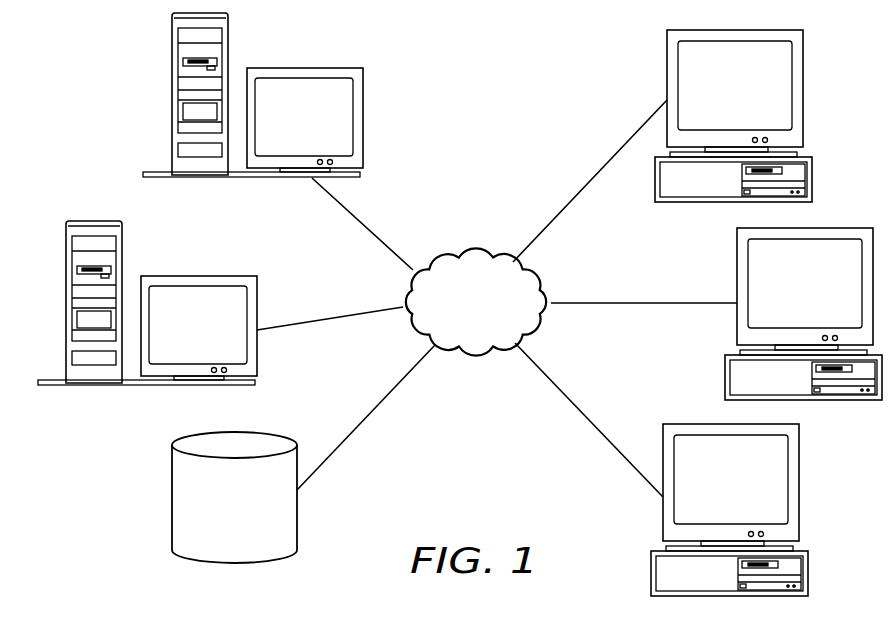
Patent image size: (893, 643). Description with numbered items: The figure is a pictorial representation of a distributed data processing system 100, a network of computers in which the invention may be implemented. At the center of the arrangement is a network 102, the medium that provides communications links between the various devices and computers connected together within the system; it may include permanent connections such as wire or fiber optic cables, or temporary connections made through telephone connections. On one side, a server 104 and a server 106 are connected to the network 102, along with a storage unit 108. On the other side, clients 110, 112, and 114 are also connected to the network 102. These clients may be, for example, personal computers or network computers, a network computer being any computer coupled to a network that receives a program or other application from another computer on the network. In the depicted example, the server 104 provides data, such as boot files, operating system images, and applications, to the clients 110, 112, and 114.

The distributed data processing system 100 is at (482, 98).
The network 102 is at (457, 330).
The server 104 is at (181, 334).
The server 106 is at (287, 126).
The storage unit 108 is at (214, 537).
The client 110 is at (717, 98).
The client 112 is at (803, 326).
The client 114 is at (729, 522).